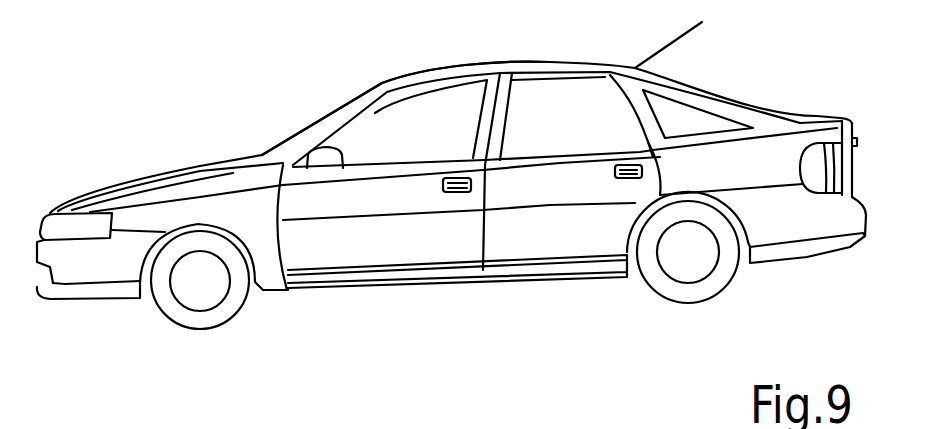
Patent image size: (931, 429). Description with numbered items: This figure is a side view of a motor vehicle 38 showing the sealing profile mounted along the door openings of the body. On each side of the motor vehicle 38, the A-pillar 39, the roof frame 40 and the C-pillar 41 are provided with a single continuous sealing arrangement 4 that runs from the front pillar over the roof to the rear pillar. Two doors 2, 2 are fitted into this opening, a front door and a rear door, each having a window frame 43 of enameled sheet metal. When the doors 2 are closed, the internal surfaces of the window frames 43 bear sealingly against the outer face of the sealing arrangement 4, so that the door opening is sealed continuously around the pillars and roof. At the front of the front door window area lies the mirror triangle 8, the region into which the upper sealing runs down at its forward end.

The door 2 is at (397, 258).
The sealing arrangement 4 is at (535, 74).
The mirror triangle 8 is at (327, 160).
The motor vehicle 38 is at (763, 77).
The A-pillar 39 is at (352, 102).
The roof frame 40 is at (466, 78).
The C-pillar 41 is at (683, 93).
The window frame 43 is at (416, 88).